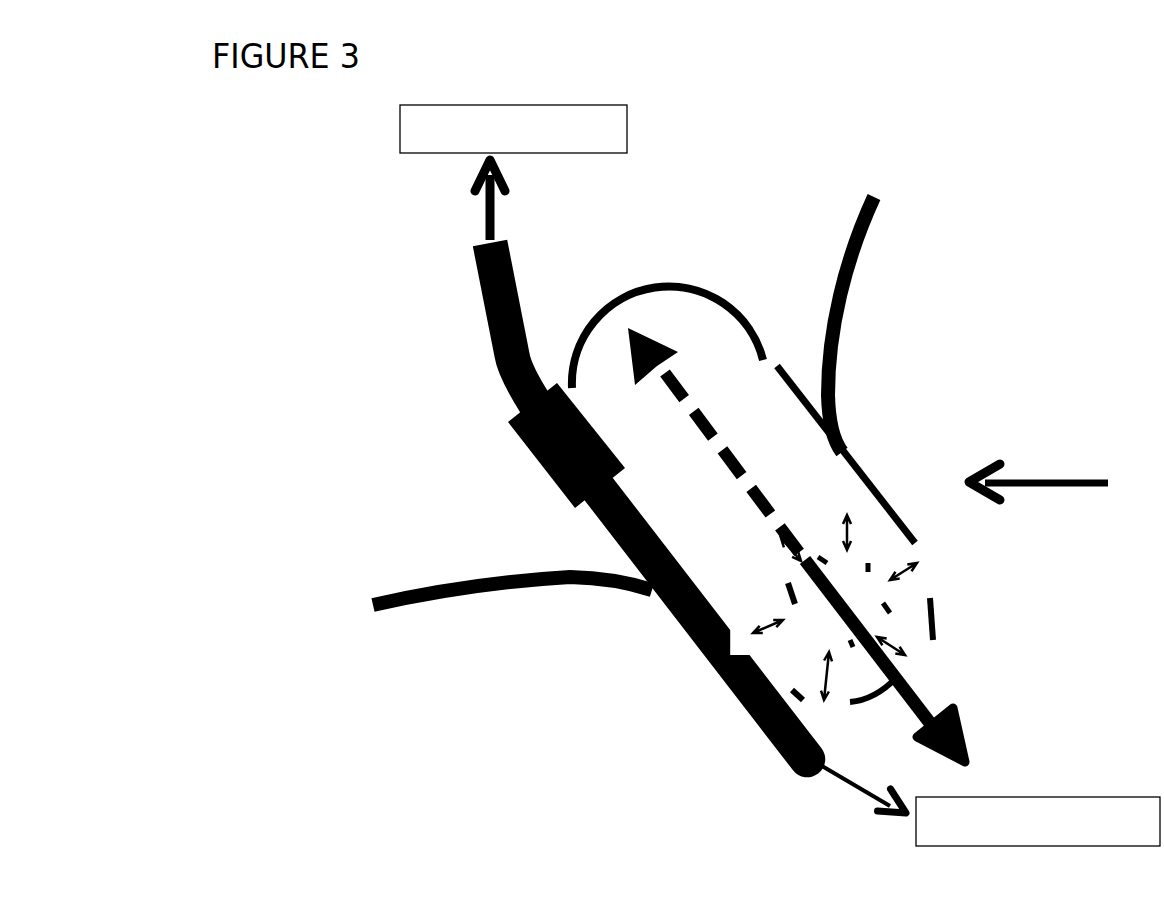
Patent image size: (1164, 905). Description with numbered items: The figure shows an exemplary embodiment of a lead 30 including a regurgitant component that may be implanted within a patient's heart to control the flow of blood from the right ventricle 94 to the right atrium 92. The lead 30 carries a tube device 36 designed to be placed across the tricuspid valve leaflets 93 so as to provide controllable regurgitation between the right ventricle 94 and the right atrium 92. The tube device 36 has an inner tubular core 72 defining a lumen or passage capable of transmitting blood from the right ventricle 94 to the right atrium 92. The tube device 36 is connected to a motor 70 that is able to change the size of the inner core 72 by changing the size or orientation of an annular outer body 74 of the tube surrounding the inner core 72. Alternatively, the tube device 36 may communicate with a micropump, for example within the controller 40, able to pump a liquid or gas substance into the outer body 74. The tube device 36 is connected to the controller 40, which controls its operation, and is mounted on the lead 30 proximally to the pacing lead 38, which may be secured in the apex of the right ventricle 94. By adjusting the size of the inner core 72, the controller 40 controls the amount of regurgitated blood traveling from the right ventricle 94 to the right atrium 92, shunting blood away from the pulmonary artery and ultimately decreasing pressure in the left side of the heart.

The lead 30 is at (468, 321).
The tube device 36 is at (1061, 482).
The pacing lead 38 is at (991, 806).
The controller 40 is at (513, 172).
The motor 70 is at (496, 449).
The inner tubular core 72 is at (865, 596).
The annular outer body 74 is at (887, 549).
The right atrium 92 is at (646, 239).
The tricuspid valve leaflets 93 is at (890, 275).
The right ventricle 94 is at (1050, 740).